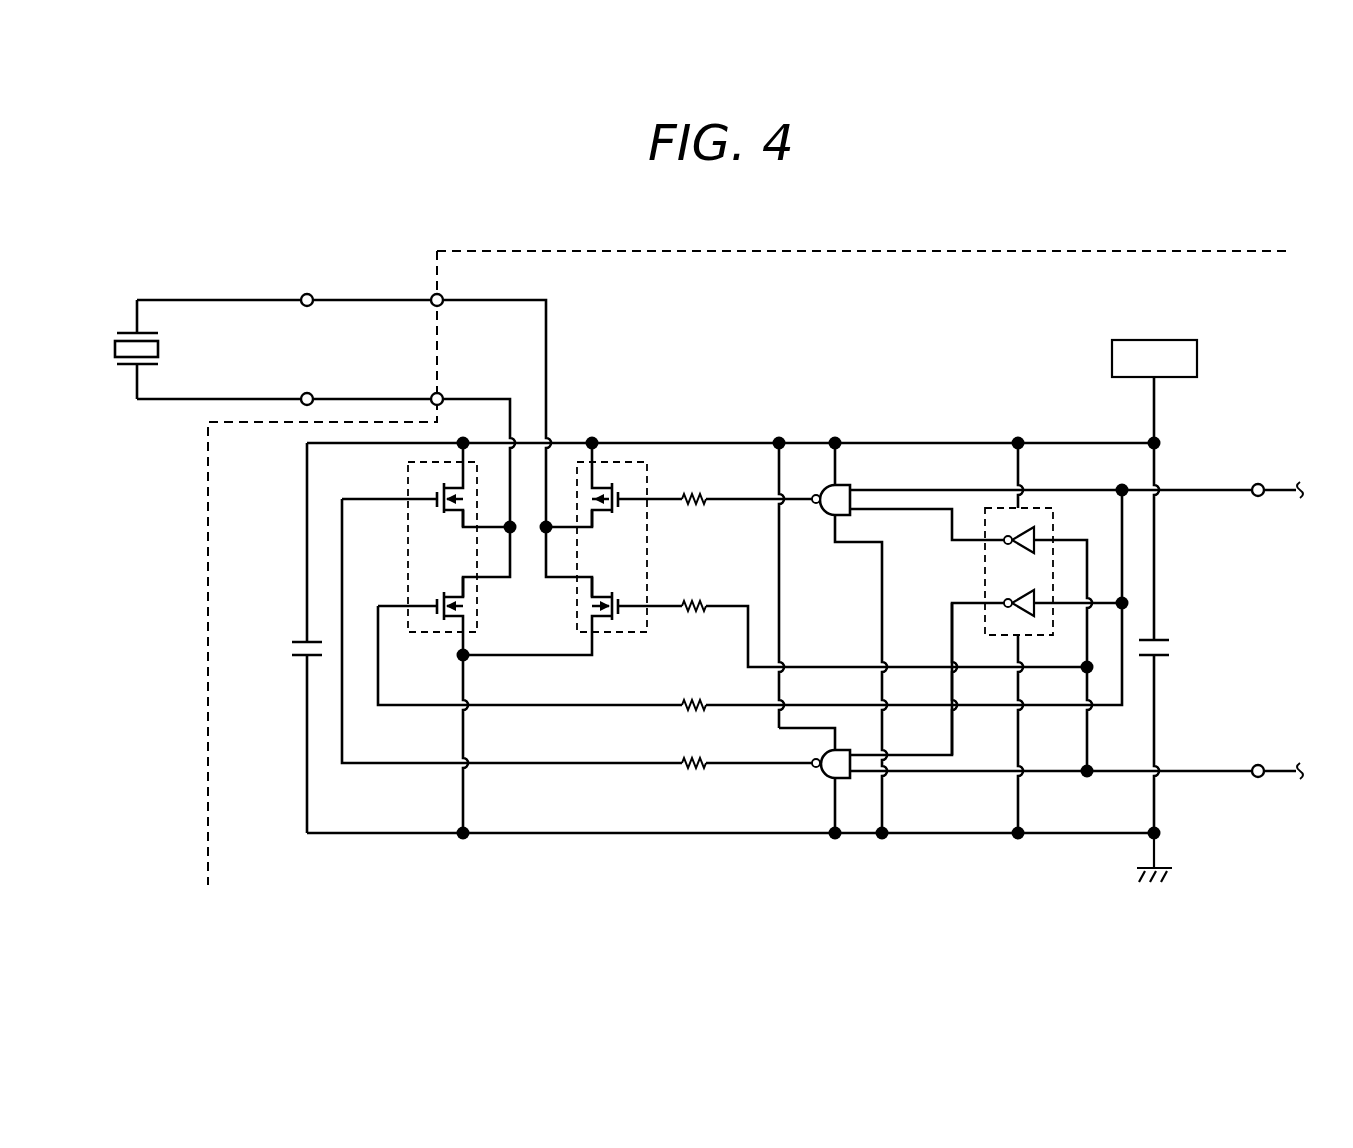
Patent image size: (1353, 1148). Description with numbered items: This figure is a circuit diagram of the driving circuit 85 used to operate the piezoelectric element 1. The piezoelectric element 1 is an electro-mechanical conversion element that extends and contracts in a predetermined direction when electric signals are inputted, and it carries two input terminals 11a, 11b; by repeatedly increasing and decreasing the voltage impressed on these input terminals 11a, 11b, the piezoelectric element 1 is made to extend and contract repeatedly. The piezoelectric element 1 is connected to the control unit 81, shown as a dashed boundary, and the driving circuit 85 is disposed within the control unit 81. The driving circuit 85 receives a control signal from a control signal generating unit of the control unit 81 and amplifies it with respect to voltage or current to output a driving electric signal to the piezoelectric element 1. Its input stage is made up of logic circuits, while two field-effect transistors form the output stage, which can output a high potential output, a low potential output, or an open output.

The piezoelectric element 1 is at (108, 345).
The input terminal 11a is at (306, 293).
The input terminal 11b is at (306, 392).
The control unit 81 is at (1124, 250).
The driving circuit 85 is at (997, 356).